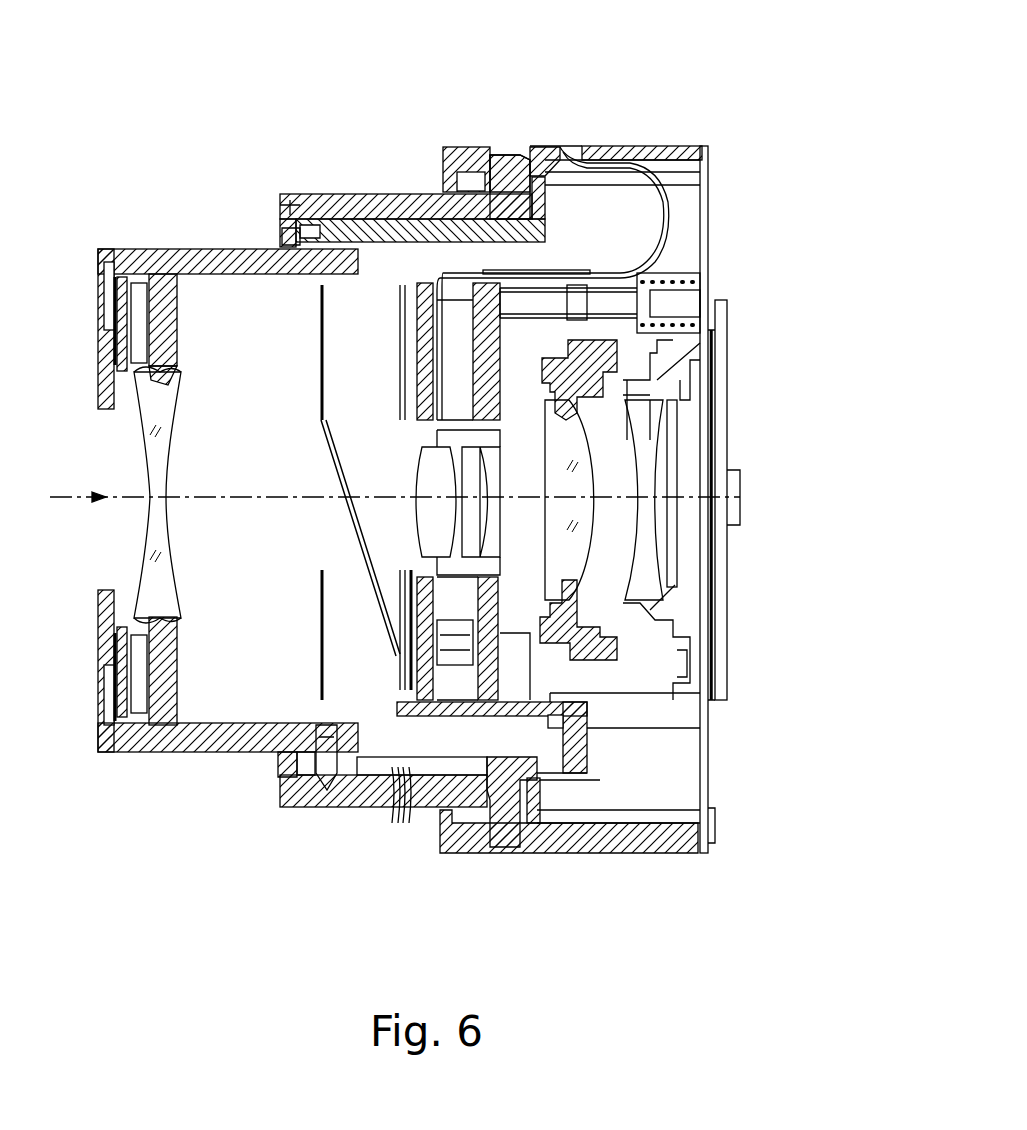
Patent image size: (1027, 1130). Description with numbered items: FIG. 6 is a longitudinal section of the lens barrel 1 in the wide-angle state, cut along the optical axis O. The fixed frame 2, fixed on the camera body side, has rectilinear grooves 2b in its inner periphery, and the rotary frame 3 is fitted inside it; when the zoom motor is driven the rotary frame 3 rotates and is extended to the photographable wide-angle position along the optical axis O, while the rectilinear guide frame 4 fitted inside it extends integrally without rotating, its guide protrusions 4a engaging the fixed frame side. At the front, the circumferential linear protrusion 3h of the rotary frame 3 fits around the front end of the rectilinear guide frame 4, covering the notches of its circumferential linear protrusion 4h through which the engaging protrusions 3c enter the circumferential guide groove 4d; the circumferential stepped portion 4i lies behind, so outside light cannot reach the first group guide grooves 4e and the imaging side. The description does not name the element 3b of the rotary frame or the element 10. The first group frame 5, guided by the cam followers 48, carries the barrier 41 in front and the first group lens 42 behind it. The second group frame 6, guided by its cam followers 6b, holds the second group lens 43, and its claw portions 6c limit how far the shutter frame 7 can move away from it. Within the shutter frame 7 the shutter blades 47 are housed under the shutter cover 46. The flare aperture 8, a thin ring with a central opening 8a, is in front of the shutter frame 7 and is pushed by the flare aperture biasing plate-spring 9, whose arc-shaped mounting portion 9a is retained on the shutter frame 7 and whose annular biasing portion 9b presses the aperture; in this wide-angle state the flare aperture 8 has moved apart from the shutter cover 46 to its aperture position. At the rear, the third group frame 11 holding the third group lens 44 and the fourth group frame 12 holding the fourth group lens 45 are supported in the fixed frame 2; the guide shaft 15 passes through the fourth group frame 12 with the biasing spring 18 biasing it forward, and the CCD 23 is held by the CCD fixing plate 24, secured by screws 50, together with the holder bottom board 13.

The lens barrel 1 is at (166, 92).
The fixed frame 2 is at (450, 147).
The rectilinear grooves 2b is at (612, 190).
The rotary frame 3 is at (338, 197).
The rotary ring projection 3b is at (505, 175).
The engaging protrusions 3c is at (290, 205).
The circumferential linear protrusion 3h is at (283, 213).
The rectilinear guide frame 4 is at (325, 218).
The guide protrusions 4a is at (545, 175).
The circumferential guide groove 4d is at (282, 238).
The first group guide grooves 4e is at (380, 777).
The circumferential linear protrusion 4h is at (290, 785).
The circumferential stepped portion 4i is at (310, 227).
The first group frame 5 is at (135, 248).
The second group frame 6 is at (530, 828).
The cam followers 6b is at (532, 800).
The claw portions 6c is at (405, 770).
The shutter frame 7 is at (430, 703).
The flare aperture 8 is at (318, 342).
The central opening 8a is at (318, 573).
The flare aperture biasing plate-spring 9 is at (397, 303).
The arc-shaped mounting portion 9a is at (400, 670).
The annular biasing portion 9b is at (405, 338).
The lens frame 10 is at (465, 700).
The third group frame 11 is at (610, 680).
The fourth group frame 12 is at (680, 330).
The holder bottom board 13 is at (710, 200).
The guide shaft 15 is at (662, 300).
The biasing spring 18 is at (672, 282).
The CCD 23 is at (714, 412).
The CCD fixing plate 24 is at (727, 330).
The barrier 41 is at (121, 325).
The first group lens 42 is at (150, 548).
The second group lens 43 is at (680, 567).
The third group lens 44 is at (585, 482).
The fourth group lens 45 is at (650, 528).
The shutter cover 46 is at (412, 680).
The shutter blades 47 is at (425, 290).
The cam followers 48 is at (328, 770).
The screws 50 is at (735, 510).
The optical axis O is at (72, 490).